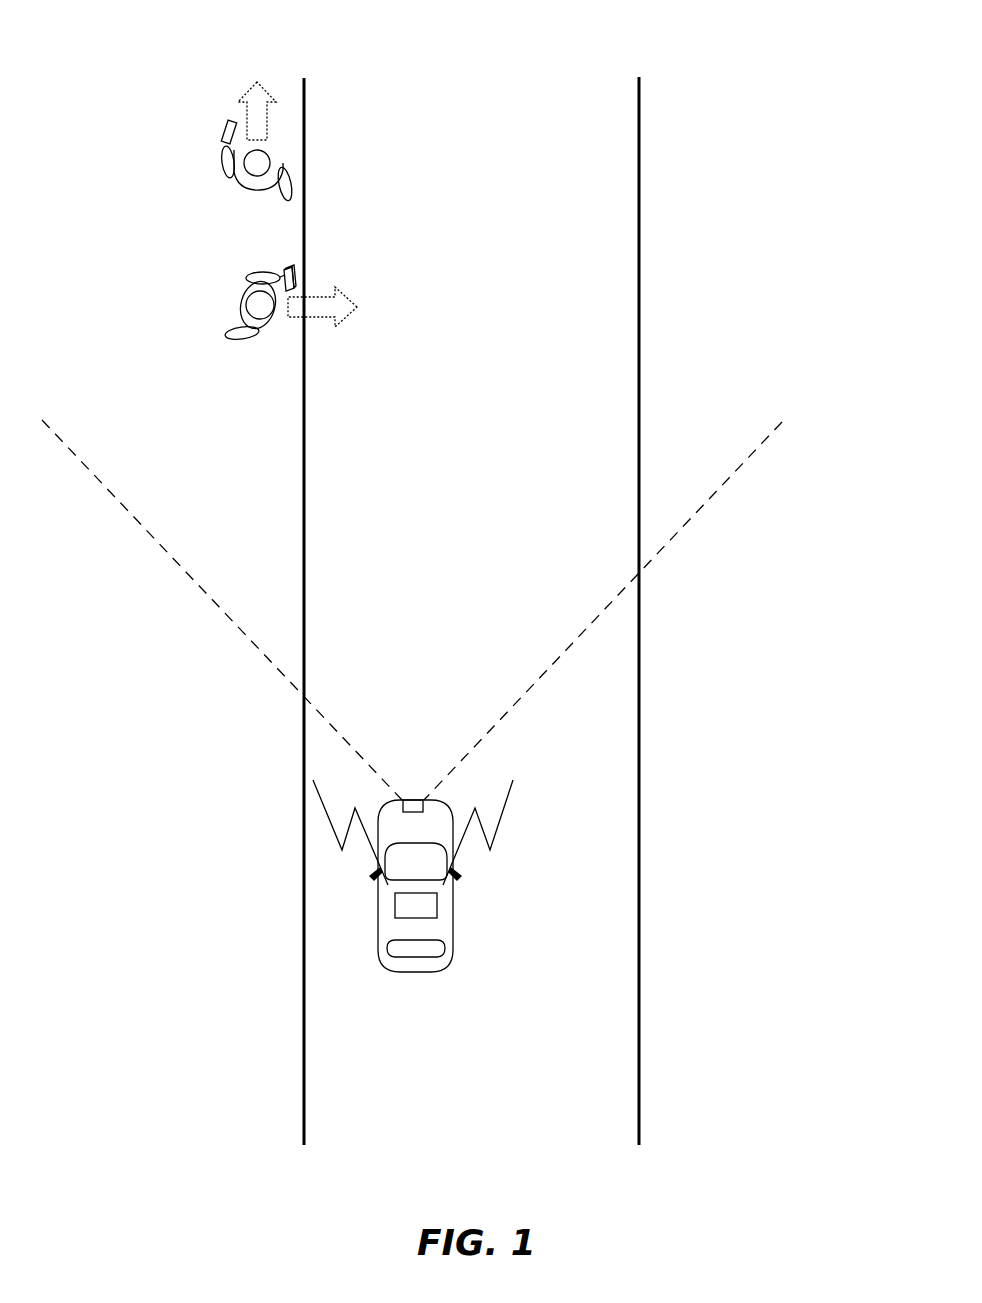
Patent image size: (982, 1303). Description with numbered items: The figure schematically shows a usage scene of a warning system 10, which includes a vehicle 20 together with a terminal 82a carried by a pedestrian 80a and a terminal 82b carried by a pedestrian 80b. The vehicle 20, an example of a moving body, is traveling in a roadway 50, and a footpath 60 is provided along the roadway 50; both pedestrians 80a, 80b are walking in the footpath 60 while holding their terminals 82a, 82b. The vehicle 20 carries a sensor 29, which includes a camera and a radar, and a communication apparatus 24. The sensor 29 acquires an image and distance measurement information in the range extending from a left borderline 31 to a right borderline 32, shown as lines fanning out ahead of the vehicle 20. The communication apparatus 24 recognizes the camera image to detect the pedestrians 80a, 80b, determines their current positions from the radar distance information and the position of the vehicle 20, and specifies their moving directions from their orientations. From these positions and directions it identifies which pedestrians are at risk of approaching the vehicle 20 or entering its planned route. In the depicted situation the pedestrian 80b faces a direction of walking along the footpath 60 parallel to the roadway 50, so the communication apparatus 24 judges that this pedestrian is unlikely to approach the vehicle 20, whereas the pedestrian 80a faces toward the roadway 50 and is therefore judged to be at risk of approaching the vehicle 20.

The warning system 10 is at (850, 52).
The vehicle 20 is at (419, 972).
The communication apparatus 24 is at (438, 900).
The sensor 29 is at (424, 803).
The left borderline 31 is at (288, 681).
The right borderline 32 is at (537, 681).
The roadway 50 is at (379, 1085).
The footpath 60 is at (228, 1085).
The pedestrian 80a is at (241, 299).
The pedestrian 80b is at (225, 153).
The terminal 82a is at (284, 270).
The terminal 82b is at (226, 125).